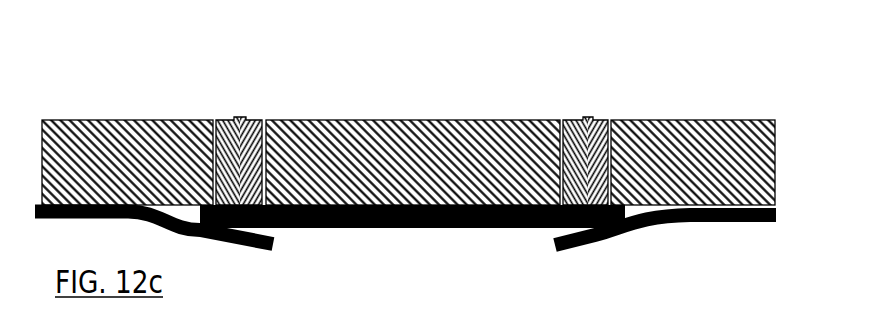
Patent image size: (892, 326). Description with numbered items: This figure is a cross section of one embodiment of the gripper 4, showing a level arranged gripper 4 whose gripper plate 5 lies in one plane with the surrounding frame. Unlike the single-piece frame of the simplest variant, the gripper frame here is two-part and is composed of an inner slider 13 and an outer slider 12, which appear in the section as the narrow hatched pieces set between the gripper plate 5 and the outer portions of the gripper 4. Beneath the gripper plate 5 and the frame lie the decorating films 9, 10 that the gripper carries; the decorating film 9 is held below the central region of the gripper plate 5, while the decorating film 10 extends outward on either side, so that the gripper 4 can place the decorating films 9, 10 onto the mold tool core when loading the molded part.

The gripper 4 is at (408, 102).
The gripper plate 5 is at (343, 150).
The decorating film 9 is at (437, 238).
The decorating film 10 is at (672, 230).
The outer slider 12 is at (226, 131).
The inner slider 13 is at (576, 131).